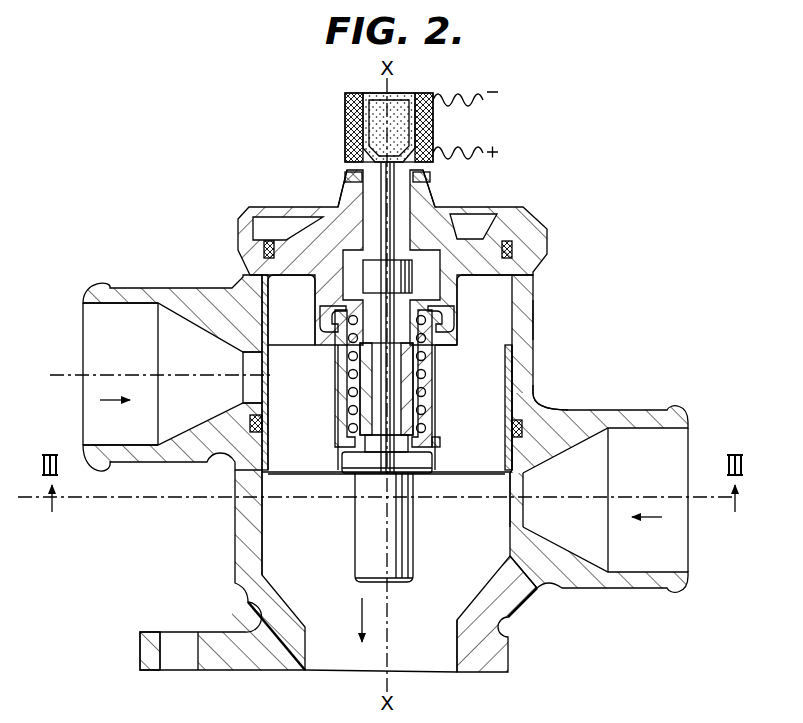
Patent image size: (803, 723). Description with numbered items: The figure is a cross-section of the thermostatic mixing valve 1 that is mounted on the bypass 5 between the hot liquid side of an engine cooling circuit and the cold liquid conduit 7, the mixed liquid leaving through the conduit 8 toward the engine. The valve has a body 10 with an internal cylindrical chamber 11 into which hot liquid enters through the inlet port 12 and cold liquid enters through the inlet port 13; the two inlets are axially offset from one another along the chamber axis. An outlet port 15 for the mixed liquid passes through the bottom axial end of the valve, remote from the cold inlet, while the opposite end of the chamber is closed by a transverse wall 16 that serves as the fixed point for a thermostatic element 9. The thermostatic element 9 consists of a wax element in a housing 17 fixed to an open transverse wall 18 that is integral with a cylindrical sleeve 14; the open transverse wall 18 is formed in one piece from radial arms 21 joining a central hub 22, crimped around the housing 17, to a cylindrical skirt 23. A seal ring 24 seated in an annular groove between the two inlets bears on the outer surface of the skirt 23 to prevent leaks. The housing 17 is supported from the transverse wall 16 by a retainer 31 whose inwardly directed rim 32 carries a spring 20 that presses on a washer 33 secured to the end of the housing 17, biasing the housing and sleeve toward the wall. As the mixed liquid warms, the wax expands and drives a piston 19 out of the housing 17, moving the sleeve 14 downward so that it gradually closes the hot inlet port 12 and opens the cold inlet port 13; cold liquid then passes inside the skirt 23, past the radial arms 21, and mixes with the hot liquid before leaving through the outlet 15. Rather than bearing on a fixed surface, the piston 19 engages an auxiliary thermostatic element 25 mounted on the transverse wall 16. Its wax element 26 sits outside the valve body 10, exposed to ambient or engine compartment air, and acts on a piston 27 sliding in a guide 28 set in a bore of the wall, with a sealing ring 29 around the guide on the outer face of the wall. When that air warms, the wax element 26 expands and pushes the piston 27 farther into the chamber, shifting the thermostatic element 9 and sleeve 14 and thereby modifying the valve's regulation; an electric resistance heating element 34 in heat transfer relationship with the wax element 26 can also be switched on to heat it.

The thermostatic mixing valve 1 is at (554, 326).
The bypass 5 is at (650, 500).
The conduit 7 is at (60, 378).
The conduit 8 is at (378, 658).
The thermostatic element 9 is at (356, 560).
The body 10 is at (531, 268).
The cylindrical chamber 11 is at (262, 545).
The inlet port 12 is at (511, 492).
The inlet port 13 is at (255, 366).
The cylindrical sleeve 14 is at (271, 417).
The outlet port 15 is at (432, 658).
The transverse wall 16 is at (505, 228).
The housing 17 is at (409, 540).
The open transverse wall 18 is at (343, 472).
The piston 19 is at (441, 300).
The spring 20 is at (426, 400).
The radial arms 21 is at (470, 474).
The central hub 22 is at (338, 455).
The cylindrical skirt 23 is at (266, 388).
The seal ring 24 is at (528, 420).
The auxiliary thermostatic element 25 is at (404, 110).
The wax element 26 is at (372, 118).
The piston 27 is at (395, 197).
The guide 28 is at (370, 206).
The sealing ring 29 is at (350, 176).
The retainer 31 is at (434, 354).
The inwardly directed rim 32 is at (440, 438).
The washer 33 is at (335, 312).
The electric resistance heating element 34 is at (434, 118).